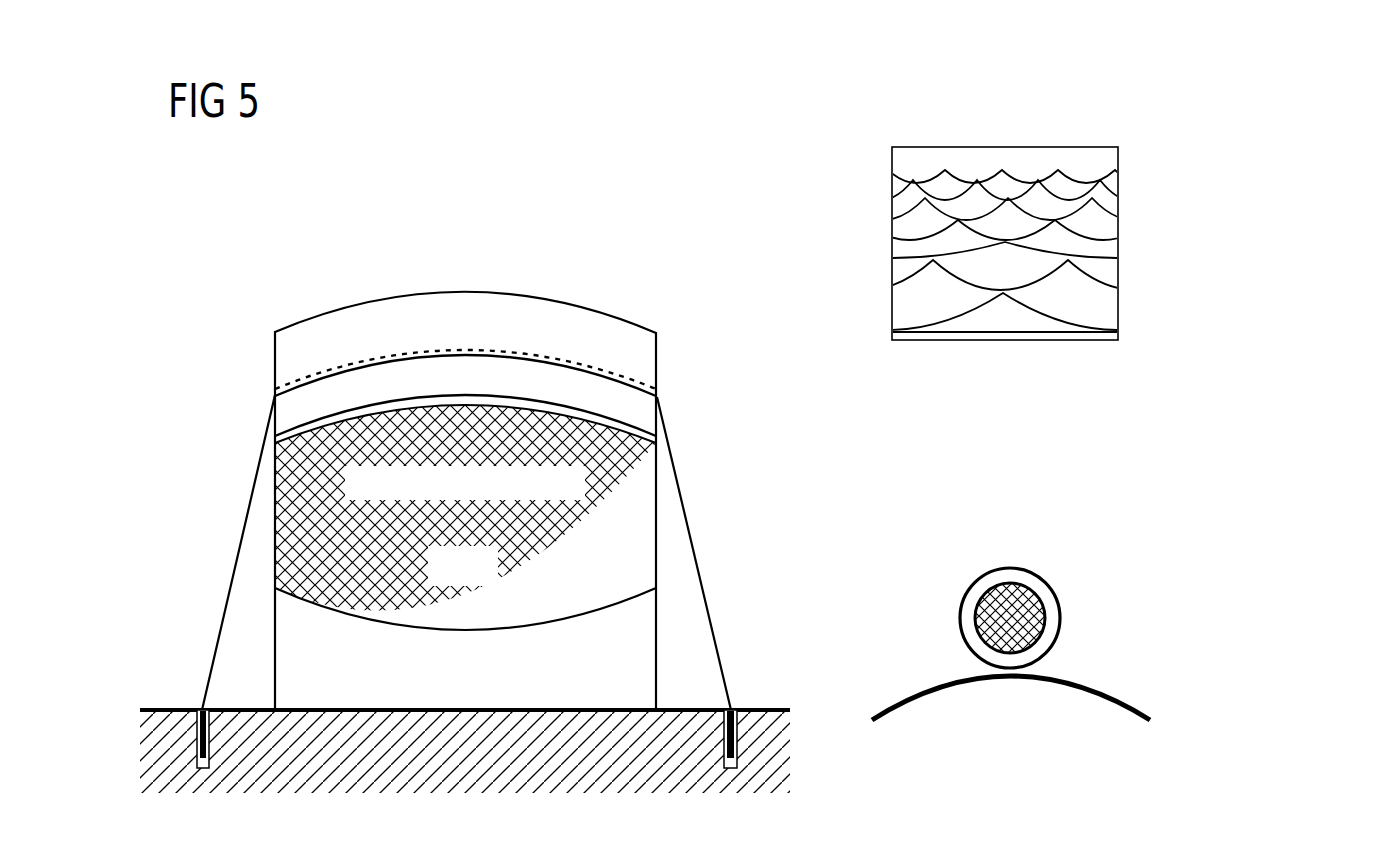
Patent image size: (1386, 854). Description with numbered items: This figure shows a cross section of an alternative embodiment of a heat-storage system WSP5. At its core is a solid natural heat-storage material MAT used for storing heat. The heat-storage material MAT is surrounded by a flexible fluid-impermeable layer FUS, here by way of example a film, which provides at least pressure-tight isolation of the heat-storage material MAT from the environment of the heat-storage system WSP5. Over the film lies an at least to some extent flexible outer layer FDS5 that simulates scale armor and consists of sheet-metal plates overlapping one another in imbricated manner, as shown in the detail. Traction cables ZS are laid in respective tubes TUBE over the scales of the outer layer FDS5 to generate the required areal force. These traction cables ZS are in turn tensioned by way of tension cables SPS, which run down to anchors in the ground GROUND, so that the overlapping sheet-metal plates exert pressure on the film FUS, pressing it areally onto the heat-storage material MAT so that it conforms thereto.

The heat-storage system WSP5 is at (466, 252).
The flexible outer layer FDS5 is at (588, 356).
The traction cables ZS is at (1110, 643).
The flexible fluid-impermeable layer FUS is at (465, 402).
The heat-storage material MAT is at (465, 517).
The tension cables SPS is at (210, 624).
The tube enclosing tension cable TUBE is at (1065, 598).
The ground GROUND is at (465, 751).